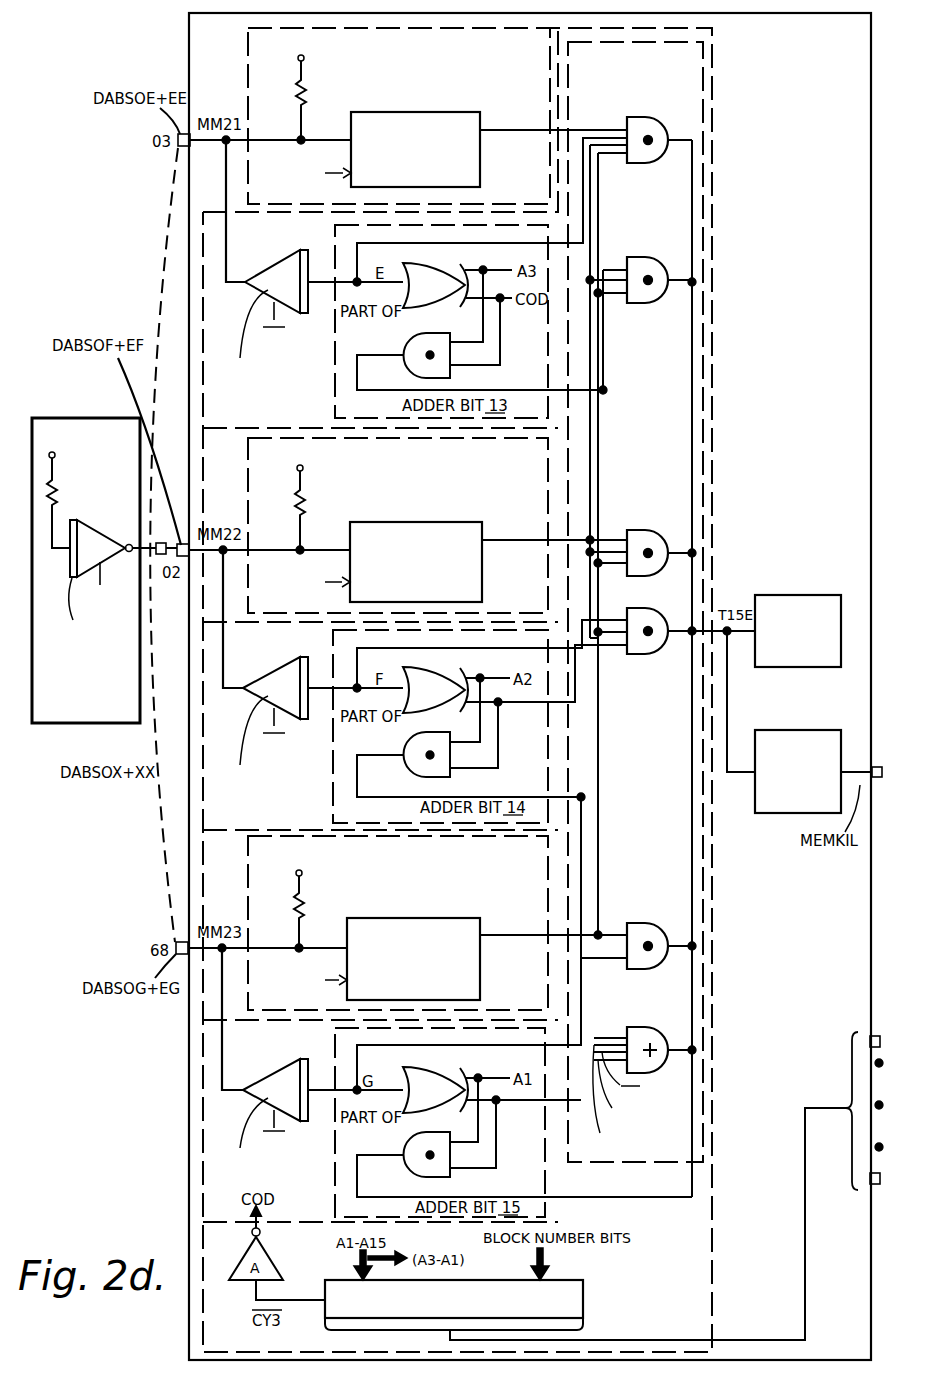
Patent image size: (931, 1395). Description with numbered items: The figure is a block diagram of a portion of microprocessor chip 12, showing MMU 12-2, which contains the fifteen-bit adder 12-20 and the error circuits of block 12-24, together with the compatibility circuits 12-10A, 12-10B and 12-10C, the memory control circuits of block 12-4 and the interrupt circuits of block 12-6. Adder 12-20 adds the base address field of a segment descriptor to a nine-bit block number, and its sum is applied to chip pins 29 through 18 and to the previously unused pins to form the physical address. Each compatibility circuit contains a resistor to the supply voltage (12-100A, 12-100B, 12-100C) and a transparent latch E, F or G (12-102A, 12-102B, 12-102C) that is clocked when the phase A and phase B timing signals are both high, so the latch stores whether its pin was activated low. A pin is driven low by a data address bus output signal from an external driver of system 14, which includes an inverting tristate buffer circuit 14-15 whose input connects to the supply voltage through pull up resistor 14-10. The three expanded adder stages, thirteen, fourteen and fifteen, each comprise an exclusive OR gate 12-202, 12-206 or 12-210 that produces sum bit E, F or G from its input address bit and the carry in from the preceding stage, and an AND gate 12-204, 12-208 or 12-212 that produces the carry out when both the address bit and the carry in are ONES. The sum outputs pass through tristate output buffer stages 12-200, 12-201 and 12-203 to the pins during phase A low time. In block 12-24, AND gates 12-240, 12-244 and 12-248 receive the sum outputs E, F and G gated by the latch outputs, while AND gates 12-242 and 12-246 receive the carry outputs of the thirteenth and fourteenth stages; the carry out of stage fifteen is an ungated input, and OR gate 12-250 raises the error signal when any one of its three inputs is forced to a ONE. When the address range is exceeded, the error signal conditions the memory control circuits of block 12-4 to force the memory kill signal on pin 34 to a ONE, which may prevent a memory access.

The microprocessor chip 12 is at (189, 27).
The MMU 12-2 is at (680, 1313).
The error circuits 12-24 is at (669, 752).
The compatibility circuit 12-10A is at (520, 53).
The resistor 12-100A is at (305, 88).
The transparent latch 12-102A is at (405, 112).
The tristate output buffer stage 12-200 is at (275, 270).
The exclusive OR gate 12-202 is at (412, 275).
The AND gate 12-204 is at (450, 370).
The AND gate 12-240 is at (635, 117).
The AND gate 12-242 is at (636, 257).
The compatibility circuit 12-10B is at (520, 463).
The resistor 12-100B is at (305, 498).
The transparent latch 12-102B is at (407, 522).
The tristate output buffer stage 12-201 is at (275, 675).
The exclusive OR gate 12-206 is at (412, 681).
The AND gate 12-208 is at (450, 773).
The AND gate 12-244 is at (636, 530).
The AND gate 12-246 is at (636, 655).
The interrupt circuits 12-6 is at (798, 595).
The memory control circuits 12-4 is at (794, 730).
The pin 34 is at (873, 774).
The compatibility circuit 12-10C is at (520, 861).
The resistor 12-100C is at (304, 900).
The transparent latch 12-102C is at (415, 918).
The tristate output buffer stage 12-203 is at (275, 1077).
The exclusive OR gate 12-210 is at (412, 1080).
The AND gate 12-212 is at (450, 1173).
The AND gate 12-248 is at (636, 923).
The OR gate 12-250 is at (636, 1027).
The adder 12-20 is at (583, 1287).
The chip pin 29 is at (888, 1043).
The chip pin 18 is at (888, 1180).
The system 14 is at (122, 716).
The pull up resistor 14-10 is at (55, 490).
The inverting tristate buffer circuit 14-15 is at (76, 523).